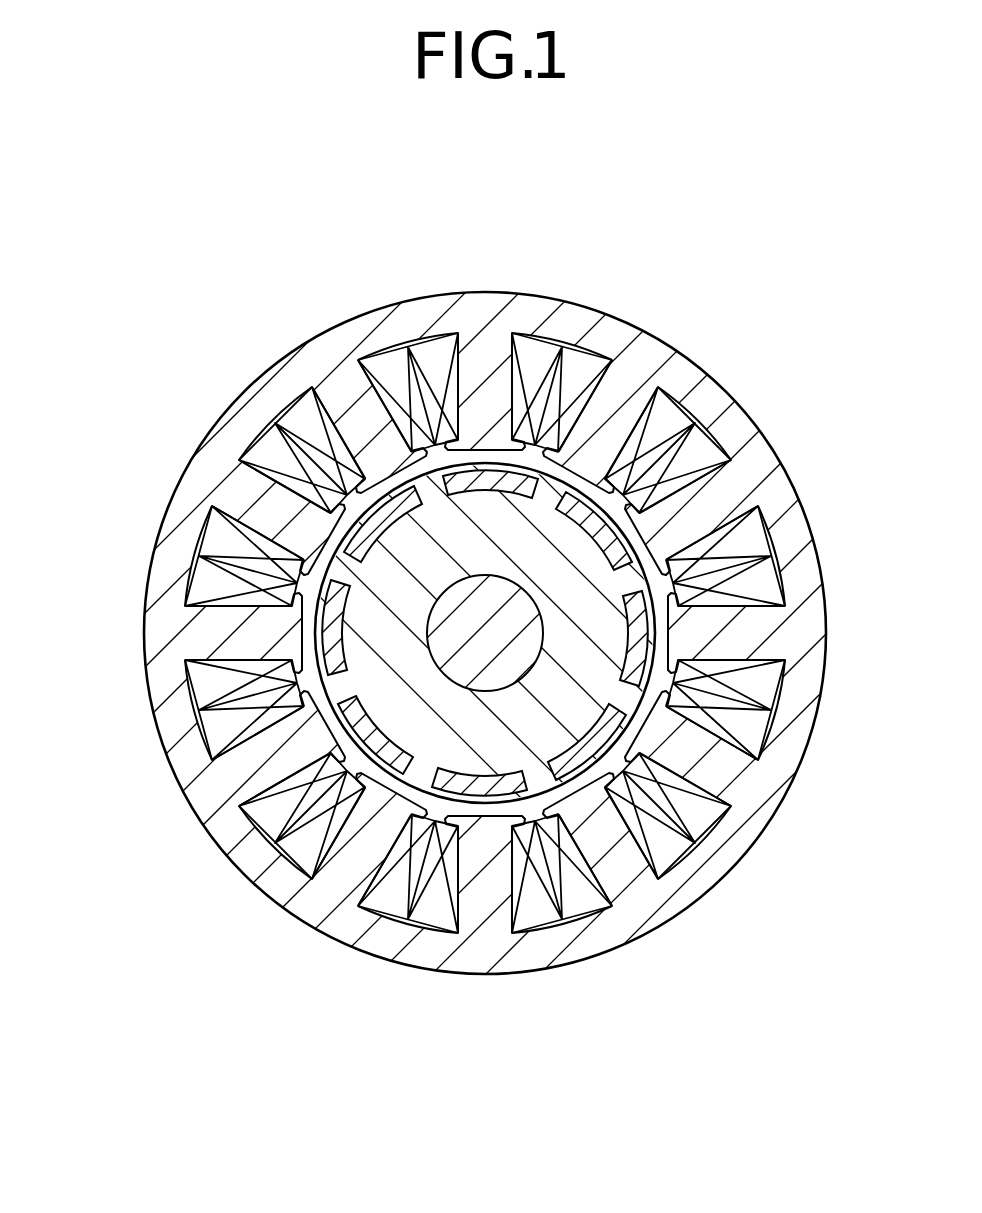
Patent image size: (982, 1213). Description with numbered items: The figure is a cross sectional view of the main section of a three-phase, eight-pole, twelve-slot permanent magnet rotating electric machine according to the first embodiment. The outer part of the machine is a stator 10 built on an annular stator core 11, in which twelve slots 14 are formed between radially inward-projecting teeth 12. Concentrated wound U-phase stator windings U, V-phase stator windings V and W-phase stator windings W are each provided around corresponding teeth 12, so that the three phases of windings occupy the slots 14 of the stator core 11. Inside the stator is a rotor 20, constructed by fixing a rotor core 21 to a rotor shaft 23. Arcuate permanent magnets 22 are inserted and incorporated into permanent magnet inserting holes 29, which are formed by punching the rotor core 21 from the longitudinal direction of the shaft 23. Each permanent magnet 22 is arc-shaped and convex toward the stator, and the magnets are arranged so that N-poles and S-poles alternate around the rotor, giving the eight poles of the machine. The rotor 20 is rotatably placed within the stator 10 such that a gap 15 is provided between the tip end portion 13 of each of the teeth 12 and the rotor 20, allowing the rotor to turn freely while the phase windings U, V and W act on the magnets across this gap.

The stator 10 is at (237, 400).
The annular stator core 11 is at (222, 445).
The teeth 12 is at (347, 387).
The tip end portion 13 is at (400, 352).
The slots 14 is at (190, 553).
The gap 15 is at (597, 482).
The rotor 20 is at (627, 753).
The rotor core 21 is at (593, 583).
The permanent magnets 22 is at (702, 452).
The rotor shaft 23 is at (448, 645).
The permanent magnet inserting holes 29 is at (323, 738).
The U-phase stator windings U is at (447, 340).
The V-phase stator windings V is at (580, 345).
The W-phase stator windings W is at (298, 410).